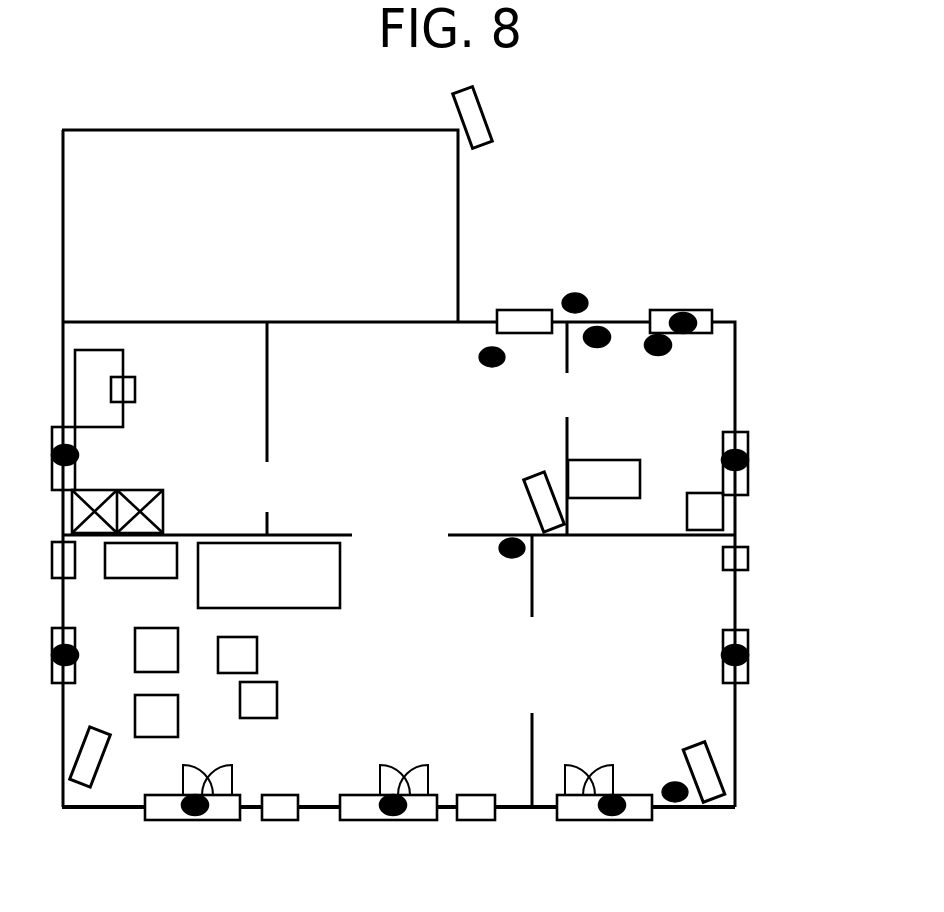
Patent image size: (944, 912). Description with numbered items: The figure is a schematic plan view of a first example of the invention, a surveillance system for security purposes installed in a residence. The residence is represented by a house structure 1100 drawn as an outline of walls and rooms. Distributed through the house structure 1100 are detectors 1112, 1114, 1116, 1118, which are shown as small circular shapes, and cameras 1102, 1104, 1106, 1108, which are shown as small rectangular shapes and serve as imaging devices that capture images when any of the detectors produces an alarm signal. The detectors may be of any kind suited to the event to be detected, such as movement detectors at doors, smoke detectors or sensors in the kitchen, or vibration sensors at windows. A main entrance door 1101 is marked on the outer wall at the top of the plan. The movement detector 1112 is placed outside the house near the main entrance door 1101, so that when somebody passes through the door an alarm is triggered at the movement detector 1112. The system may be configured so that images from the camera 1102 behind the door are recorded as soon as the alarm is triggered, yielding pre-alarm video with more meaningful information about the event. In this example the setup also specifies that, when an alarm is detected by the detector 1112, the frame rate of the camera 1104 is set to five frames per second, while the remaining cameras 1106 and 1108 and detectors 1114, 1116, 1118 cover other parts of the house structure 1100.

The house structure 1100 is at (128, 129).
The main entrance door 1101 is at (519, 295).
The camera 1102 is at (480, 150).
The camera 1104 is at (557, 536).
The camera 1106 is at (92, 792).
The camera 1108 is at (722, 770).
The movement detector 1112 is at (612, 262).
The detector 1114 is at (492, 368).
The detector 1116 is at (508, 558).
The detector 1118 is at (677, 803).